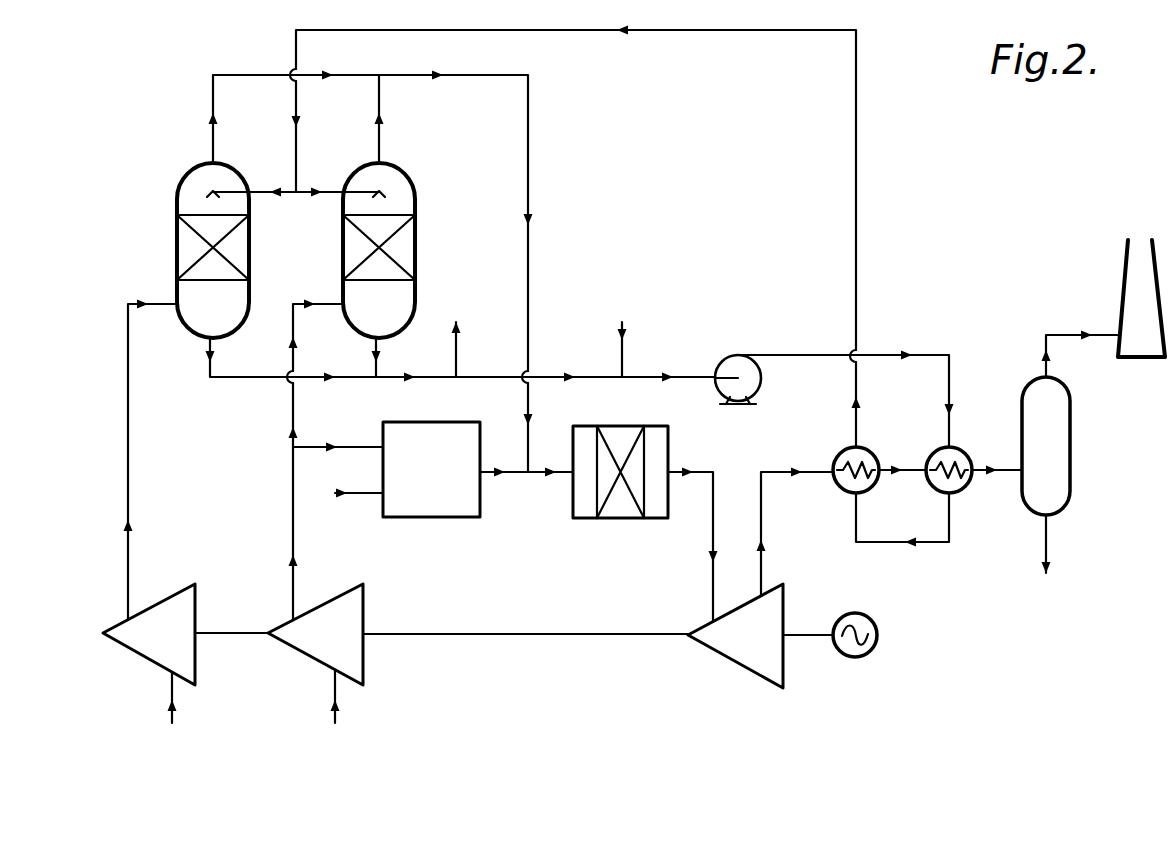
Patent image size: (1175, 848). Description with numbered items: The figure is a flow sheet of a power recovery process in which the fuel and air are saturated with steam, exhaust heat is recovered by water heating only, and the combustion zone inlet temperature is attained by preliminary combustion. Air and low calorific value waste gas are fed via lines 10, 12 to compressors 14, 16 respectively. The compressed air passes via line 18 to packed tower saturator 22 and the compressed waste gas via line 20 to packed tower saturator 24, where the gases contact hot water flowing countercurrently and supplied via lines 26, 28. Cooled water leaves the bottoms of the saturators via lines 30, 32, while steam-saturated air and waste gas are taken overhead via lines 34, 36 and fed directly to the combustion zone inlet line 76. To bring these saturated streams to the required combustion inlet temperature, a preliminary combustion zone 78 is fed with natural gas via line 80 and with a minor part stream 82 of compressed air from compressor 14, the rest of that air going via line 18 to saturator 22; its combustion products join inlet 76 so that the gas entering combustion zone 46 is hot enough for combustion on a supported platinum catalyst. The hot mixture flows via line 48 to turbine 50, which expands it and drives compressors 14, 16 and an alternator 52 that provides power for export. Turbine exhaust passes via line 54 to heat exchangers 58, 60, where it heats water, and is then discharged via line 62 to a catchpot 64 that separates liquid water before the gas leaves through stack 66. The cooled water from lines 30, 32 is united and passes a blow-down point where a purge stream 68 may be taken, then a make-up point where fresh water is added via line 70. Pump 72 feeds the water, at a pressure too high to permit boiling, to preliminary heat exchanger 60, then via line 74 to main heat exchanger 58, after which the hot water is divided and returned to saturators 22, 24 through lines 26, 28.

The air feed line 10 is at (337, 717).
The waste gas feed line 12 is at (174, 717).
The air compressor 14 is at (318, 641).
The waste gas compressor 16 is at (158, 641).
The compressed air line 18 is at (289, 411).
The compressed waste gas line 20 is at (129, 456).
The air saturator 22 is at (416, 248).
The waste gas saturator 24 is at (250, 248).
The hot water supply line 26 is at (314, 189).
The hot water supply line 28 is at (263, 189).
The cooled water line 30 is at (378, 350).
The cooled water line 32 is at (229, 380).
The saturated air overhead line 34 is at (381, 128).
The saturated waste gas overhead line 36 is at (215, 131).
The combustion zone 46 is at (611, 520).
The hot mixture line 48 is at (711, 547).
The turbine 50 is at (725, 650).
The alternator 52 is at (875, 620).
The turbine exhaust line 54 is at (763, 525).
The main heat exchanger 58 is at (873, 452).
The preliminary heat exchanger 60 is at (945, 453).
The exhaust discharge line 62 is at (1012, 469).
The catchpot 64 is at (1071, 443).
The stack 66 is at (1120, 293).
The purge stream 68 is at (458, 345).
The make-up water line 70 is at (624, 346).
The pump 72 is at (738, 354).
The water transfer line 74 is at (886, 546).
The combustion zone inlet line 76 is at (548, 476).
The preliminary combustion zone 78 is at (427, 507).
The natural gas fuel line 80 is at (358, 492).
The minor compressed air stream 82 is at (360, 446).